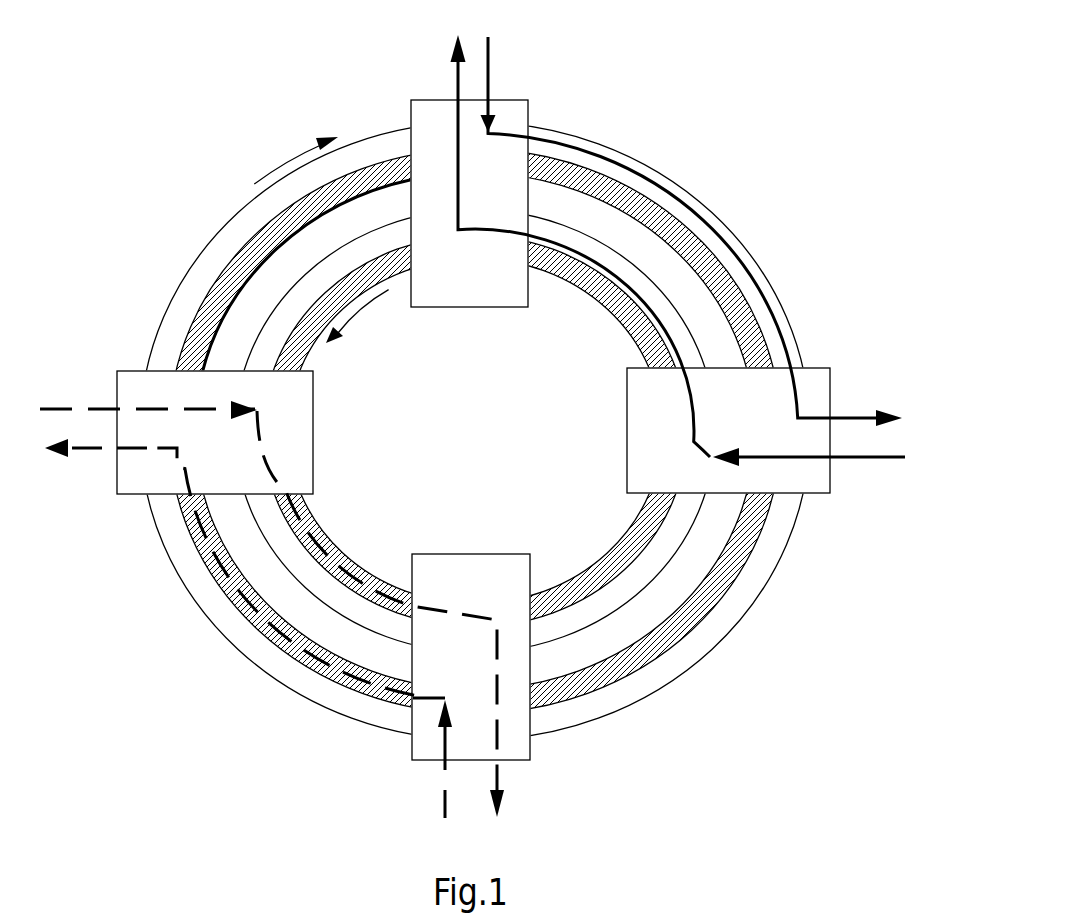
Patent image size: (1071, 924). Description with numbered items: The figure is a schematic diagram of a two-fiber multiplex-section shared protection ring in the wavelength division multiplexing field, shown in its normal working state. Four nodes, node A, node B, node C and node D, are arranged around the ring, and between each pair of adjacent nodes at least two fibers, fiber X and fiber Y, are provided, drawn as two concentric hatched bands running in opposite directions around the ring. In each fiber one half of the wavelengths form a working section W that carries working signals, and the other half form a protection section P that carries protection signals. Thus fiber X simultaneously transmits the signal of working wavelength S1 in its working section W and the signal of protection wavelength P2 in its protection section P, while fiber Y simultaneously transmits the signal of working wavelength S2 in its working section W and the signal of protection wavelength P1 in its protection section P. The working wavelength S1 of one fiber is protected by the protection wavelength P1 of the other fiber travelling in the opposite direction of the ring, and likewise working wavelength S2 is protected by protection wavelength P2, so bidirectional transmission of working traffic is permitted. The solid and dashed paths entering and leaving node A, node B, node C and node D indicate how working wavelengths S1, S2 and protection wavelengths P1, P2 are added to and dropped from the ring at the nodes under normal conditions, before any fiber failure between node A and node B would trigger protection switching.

The working section W is at (232, 208).
The protection section P is at (226, 250).
The fiber X is at (172, 260).
The fiber Y is at (232, 340).
The working wavelength S1 is at (633, 157).
The working wavelength S2 is at (627, 263).
The protection wavelength P1 is at (648, 308).
The protection wavelength P2 is at (656, 194).
The node A is at (469, 203).
The node B is at (728, 430).
The node C is at (471, 657).
The node D is at (215, 432).